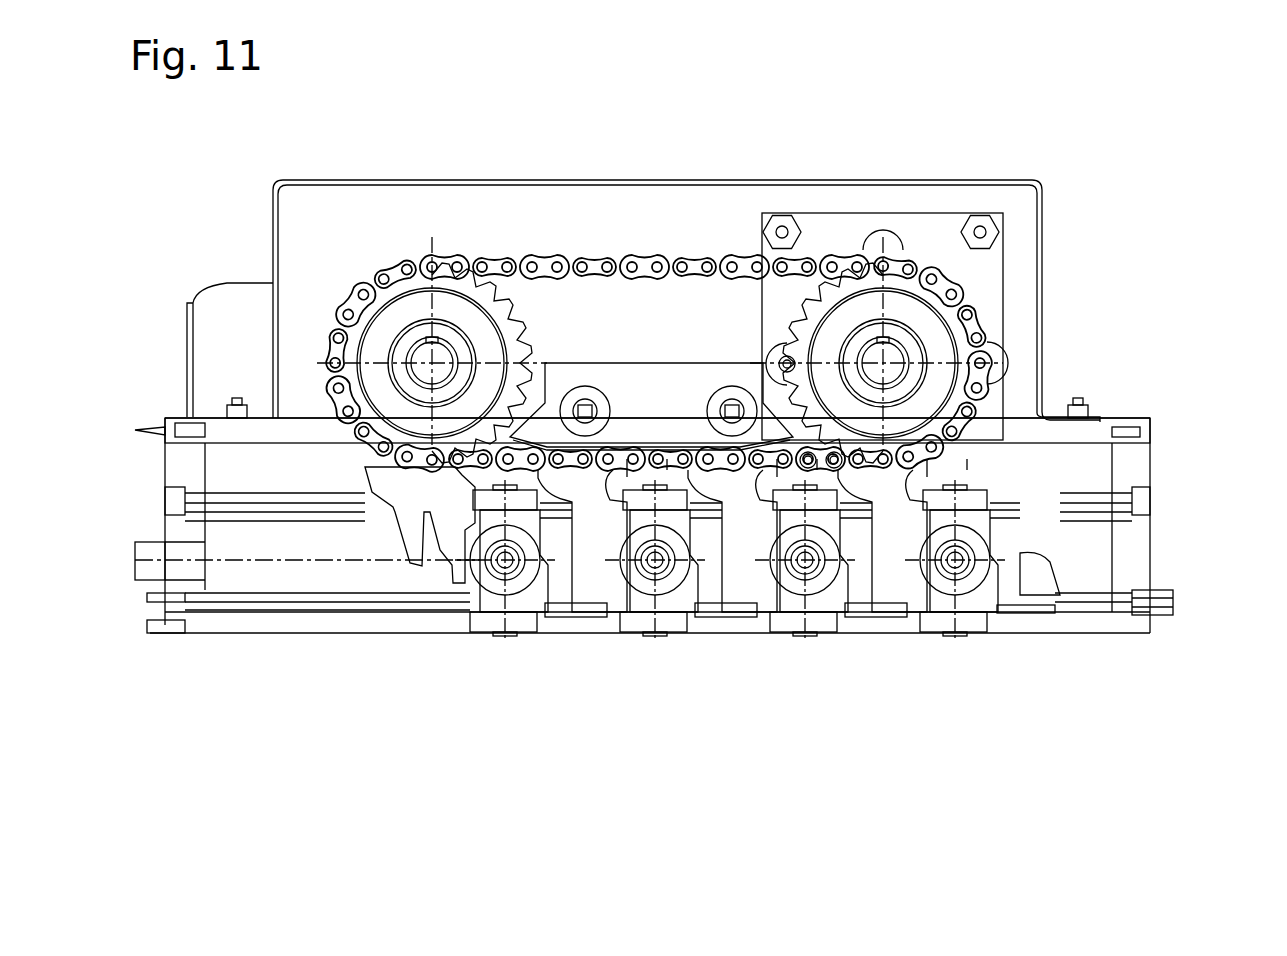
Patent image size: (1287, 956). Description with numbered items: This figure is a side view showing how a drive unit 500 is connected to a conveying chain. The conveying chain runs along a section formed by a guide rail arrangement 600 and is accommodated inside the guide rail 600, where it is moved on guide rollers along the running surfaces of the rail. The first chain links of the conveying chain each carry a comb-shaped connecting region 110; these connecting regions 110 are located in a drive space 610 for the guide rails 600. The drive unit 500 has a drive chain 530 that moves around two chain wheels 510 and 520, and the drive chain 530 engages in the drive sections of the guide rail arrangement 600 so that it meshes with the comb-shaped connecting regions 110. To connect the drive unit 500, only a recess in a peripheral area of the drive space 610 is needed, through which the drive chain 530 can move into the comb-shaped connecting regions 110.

The drive unit 500 is at (698, 239).
The chain wheel 510 is at (907, 310).
The chain wheel 520 is at (402, 308).
The drive chain 530 is at (595, 267).
The drive space 610 is at (1073, 452).
The comb-shaped connecting region 110 is at (452, 485).
The guide rail arrangement 600 is at (1087, 632).